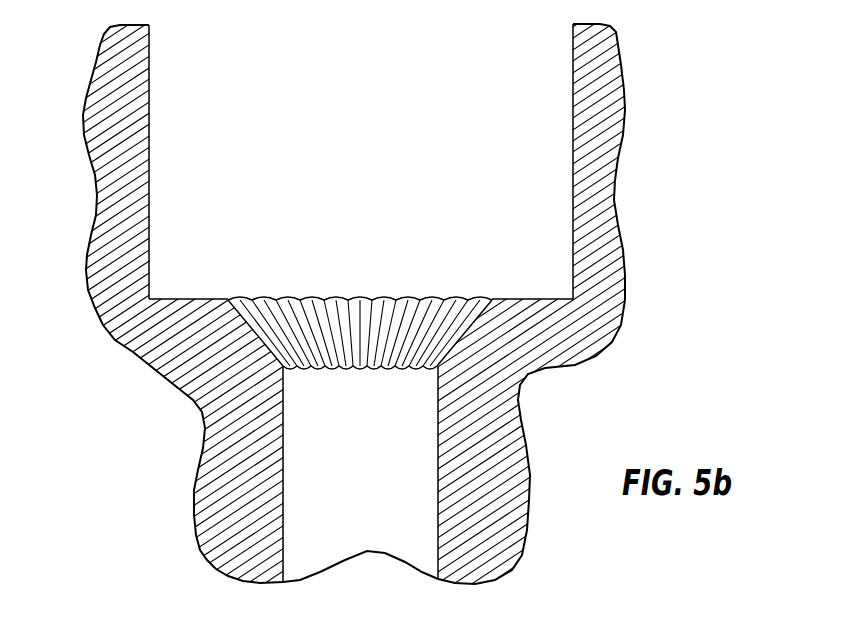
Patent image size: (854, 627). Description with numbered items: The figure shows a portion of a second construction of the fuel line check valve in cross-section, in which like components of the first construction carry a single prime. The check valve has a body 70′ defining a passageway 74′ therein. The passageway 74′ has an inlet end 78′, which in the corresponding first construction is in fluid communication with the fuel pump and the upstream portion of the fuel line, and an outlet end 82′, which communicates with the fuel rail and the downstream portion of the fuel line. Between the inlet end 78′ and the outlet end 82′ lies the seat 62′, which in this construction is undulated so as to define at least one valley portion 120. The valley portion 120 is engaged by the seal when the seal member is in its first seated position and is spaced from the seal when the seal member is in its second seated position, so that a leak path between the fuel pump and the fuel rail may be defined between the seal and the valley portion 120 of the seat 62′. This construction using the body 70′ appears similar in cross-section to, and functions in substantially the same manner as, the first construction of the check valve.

The body 70′ is at (592, 222).
The outlet end 82′ is at (150, 71).
The passageway 74′ is at (573, 170).
The seat 62′ is at (358, 307).
The valley portion 120 is at (292, 334).
The inlet end 78′ is at (438, 438).